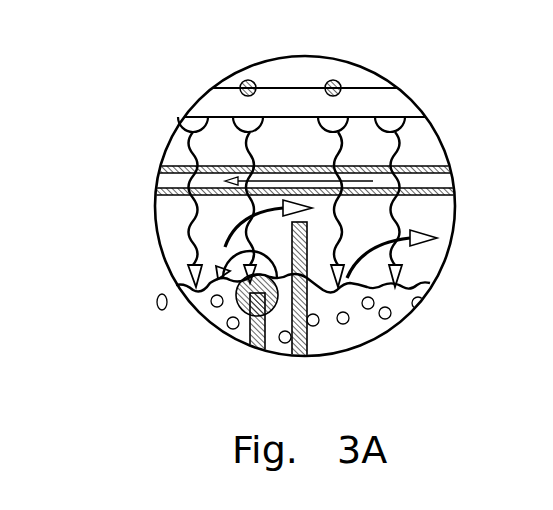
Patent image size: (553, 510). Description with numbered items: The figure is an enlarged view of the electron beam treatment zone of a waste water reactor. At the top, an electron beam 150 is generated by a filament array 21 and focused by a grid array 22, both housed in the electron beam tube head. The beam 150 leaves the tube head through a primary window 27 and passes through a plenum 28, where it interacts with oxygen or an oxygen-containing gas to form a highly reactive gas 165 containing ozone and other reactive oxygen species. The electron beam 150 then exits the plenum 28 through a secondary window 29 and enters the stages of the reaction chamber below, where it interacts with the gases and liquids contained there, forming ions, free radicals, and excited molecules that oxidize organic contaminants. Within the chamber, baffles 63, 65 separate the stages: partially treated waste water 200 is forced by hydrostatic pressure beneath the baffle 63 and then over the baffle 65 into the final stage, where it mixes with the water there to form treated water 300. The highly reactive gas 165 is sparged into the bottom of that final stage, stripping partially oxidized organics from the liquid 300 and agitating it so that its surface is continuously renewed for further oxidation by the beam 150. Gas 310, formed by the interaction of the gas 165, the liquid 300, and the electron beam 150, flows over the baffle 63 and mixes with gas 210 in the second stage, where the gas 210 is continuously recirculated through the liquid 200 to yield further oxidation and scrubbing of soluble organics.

The filament array 21 is at (340, 82).
The grid array 22 is at (383, 115).
The primary window 27 is at (417, 165).
The plenum 28 is at (430, 182).
The secondary window 29 is at (423, 197).
The baffle 63 is at (307, 347).
The baffle 65 is at (263, 342).
The electron beam 150 is at (247, 143).
The highly reactive gas 165 is at (225, 181).
The partially treated waste water 200 is at (363, 328).
The gas 210 is at (430, 248).
The treated water 300 is at (217, 318).
The gas 310 is at (178, 245).